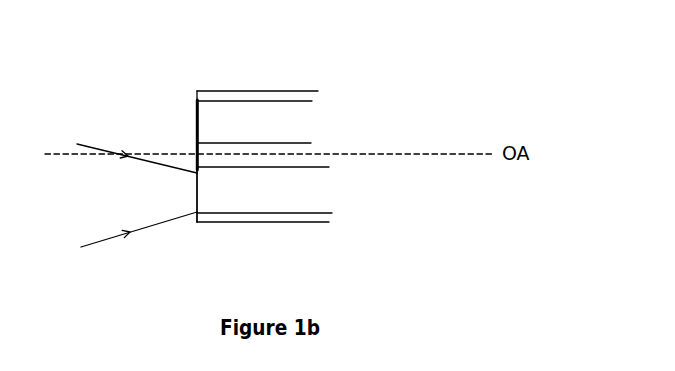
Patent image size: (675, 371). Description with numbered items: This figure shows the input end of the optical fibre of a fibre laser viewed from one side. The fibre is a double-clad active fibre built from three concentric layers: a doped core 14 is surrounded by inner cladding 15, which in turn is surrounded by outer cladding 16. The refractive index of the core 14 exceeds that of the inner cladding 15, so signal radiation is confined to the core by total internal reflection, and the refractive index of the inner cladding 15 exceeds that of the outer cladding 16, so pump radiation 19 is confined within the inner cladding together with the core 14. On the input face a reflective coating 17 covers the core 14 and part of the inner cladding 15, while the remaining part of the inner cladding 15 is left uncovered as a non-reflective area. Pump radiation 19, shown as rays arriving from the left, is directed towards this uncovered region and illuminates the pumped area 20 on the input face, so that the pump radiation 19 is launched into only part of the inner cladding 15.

The doped core 14 is at (292, 150).
The inner cladding 15 is at (283, 125).
The outer cladding 16 is at (248, 97).
The reflective coating 17 is at (195, 117).
The pump radiation 19 is at (137, 195).
The pumped area 20 is at (197, 193).